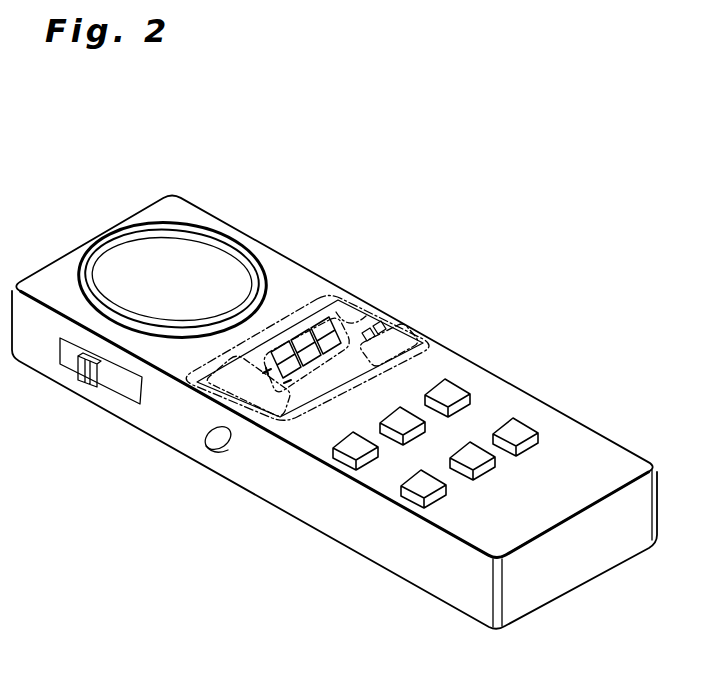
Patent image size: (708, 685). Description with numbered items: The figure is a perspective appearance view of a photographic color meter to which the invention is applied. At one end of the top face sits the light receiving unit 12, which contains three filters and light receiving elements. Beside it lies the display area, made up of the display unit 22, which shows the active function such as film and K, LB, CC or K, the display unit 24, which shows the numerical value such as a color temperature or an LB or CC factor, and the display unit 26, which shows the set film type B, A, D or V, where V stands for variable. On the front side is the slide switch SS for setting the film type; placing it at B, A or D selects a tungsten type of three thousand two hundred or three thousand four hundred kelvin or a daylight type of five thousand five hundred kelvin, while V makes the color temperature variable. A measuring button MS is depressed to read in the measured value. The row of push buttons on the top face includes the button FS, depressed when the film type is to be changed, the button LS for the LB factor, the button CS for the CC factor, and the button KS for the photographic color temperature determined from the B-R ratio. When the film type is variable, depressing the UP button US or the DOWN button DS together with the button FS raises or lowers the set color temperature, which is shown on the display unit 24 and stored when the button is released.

The light receiving unit 12 is at (212, 262).
The display unit 22 is at (325, 295).
The display unit 24 is at (297, 392).
The display unit 26 is at (432, 338).
The slide switch SS is at (92, 388).
The measuring button MS is at (213, 447).
The button FS is at (352, 447).
The button LS is at (405, 422).
The button CS is at (457, 385).
The button KS is at (422, 488).
The UP button US is at (468, 459).
The DOWN button DS is at (518, 432).